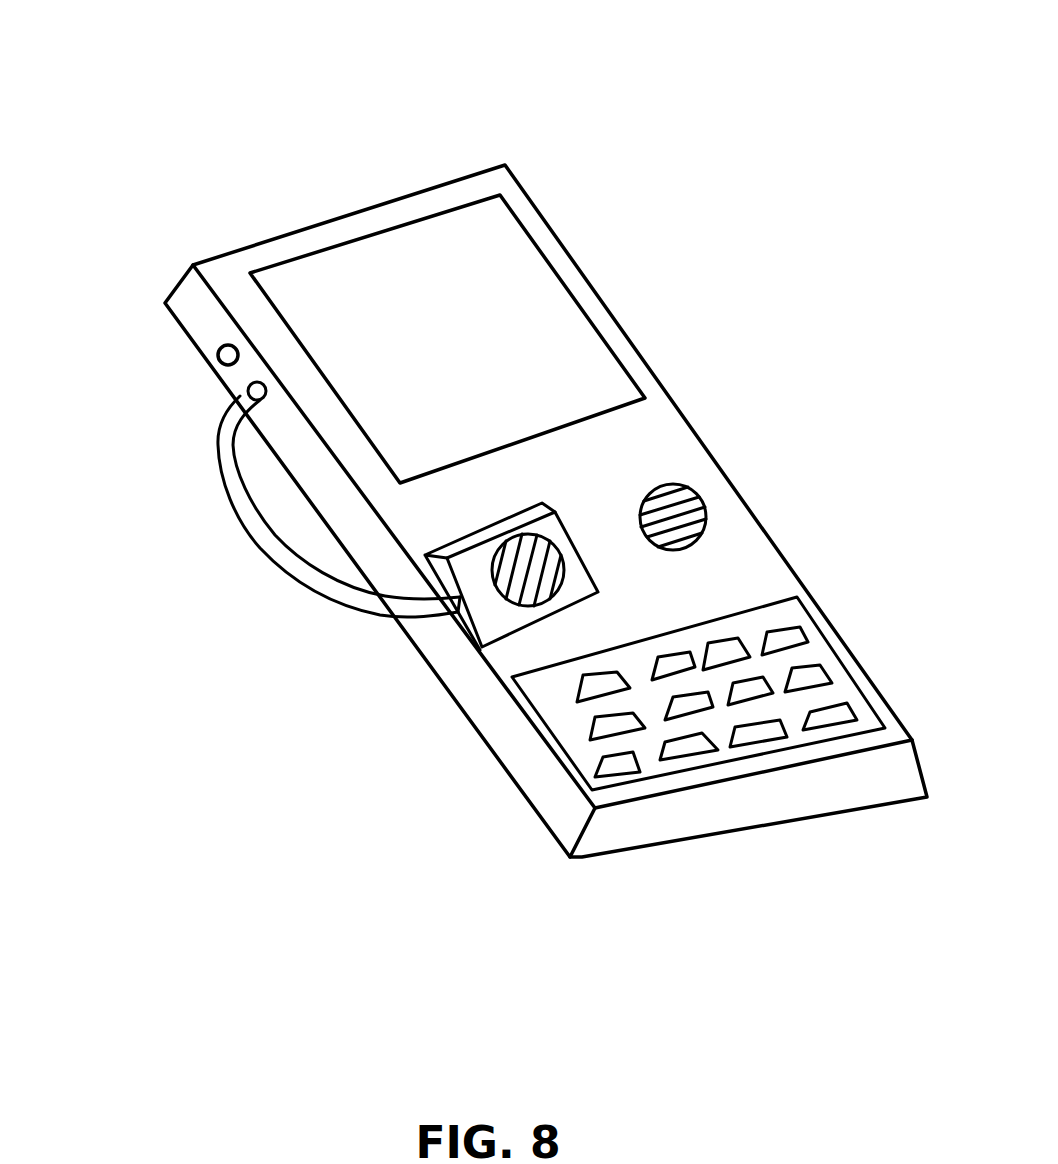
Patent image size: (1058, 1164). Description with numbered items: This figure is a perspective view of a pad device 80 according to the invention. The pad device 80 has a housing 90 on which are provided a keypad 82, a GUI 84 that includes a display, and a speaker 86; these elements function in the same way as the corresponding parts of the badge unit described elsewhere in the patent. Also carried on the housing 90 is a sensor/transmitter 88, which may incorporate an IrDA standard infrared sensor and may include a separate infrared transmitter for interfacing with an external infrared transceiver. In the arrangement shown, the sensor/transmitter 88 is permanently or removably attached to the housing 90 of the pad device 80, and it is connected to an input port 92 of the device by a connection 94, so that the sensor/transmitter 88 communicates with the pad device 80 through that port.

The pad device 80 is at (692, 162).
The keypad 82 is at (848, 688).
The GUI 84 is at (293, 293).
The speaker 86 is at (702, 502).
The sensor/transmitter 88 is at (498, 613).
The housing 90 is at (673, 425).
The input port 92 is at (240, 386).
The connection 94 is at (268, 538).